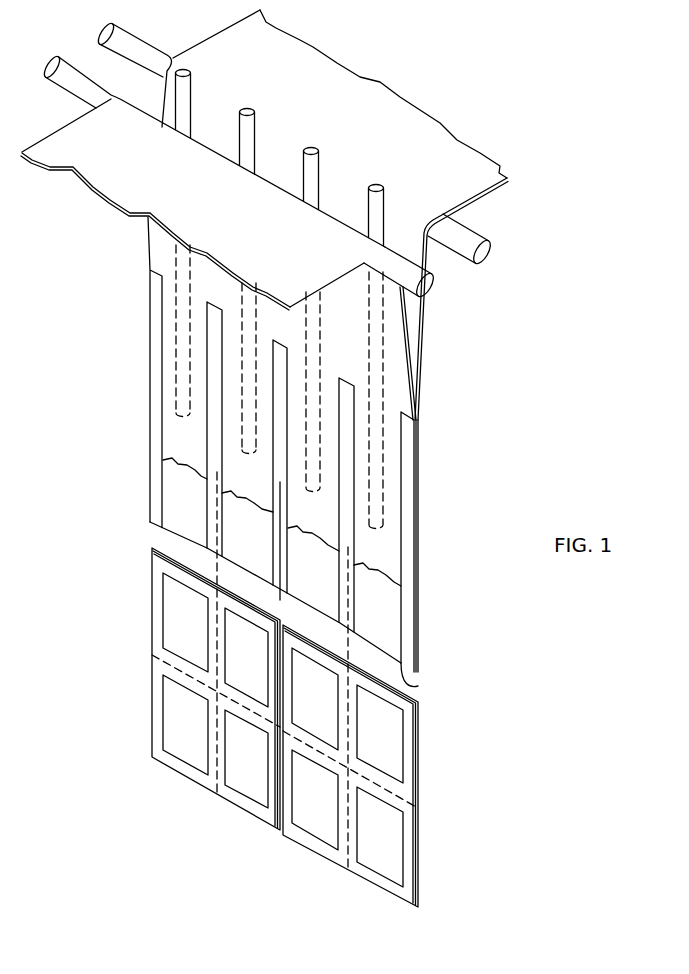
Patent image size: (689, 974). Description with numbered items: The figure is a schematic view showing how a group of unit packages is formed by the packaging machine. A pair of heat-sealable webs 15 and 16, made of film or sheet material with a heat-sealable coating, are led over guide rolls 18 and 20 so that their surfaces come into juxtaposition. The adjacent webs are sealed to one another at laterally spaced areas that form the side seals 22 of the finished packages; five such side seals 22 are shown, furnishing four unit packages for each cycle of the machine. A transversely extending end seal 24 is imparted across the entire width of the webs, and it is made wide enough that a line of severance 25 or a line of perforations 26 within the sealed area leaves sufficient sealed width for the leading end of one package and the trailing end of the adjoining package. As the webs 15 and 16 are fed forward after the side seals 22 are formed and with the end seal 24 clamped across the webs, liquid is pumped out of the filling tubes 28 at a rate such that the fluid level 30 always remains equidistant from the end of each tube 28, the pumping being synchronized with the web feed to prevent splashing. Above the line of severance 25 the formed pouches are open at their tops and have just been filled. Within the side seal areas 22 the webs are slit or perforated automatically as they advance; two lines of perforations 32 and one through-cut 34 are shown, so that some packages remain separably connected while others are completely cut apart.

The heat-sealable web 15 is at (500, 172).
The heat-sealable web 16 is at (97, 195).
The guide roll 18 is at (487, 240).
The guide roll 20 is at (432, 289).
The side seal 22 is at (164, 273).
The end seal 24 is at (165, 525).
The line of severance 25 is at (418, 687).
The line of perforations 26 is at (152, 656).
The filling tube 28 is at (190, 73).
The fluid level 30 is at (197, 475).
The line of perforations 32 is at (215, 498).
The through-cut 34 is at (281, 570).